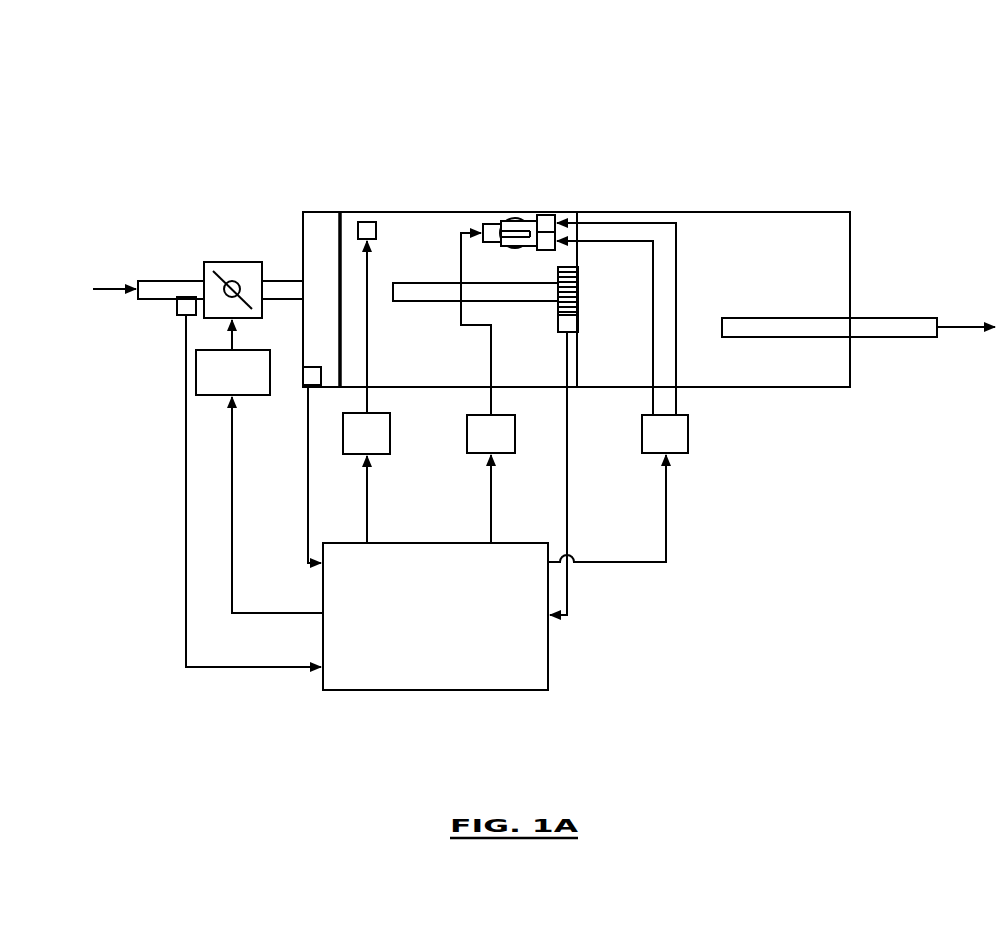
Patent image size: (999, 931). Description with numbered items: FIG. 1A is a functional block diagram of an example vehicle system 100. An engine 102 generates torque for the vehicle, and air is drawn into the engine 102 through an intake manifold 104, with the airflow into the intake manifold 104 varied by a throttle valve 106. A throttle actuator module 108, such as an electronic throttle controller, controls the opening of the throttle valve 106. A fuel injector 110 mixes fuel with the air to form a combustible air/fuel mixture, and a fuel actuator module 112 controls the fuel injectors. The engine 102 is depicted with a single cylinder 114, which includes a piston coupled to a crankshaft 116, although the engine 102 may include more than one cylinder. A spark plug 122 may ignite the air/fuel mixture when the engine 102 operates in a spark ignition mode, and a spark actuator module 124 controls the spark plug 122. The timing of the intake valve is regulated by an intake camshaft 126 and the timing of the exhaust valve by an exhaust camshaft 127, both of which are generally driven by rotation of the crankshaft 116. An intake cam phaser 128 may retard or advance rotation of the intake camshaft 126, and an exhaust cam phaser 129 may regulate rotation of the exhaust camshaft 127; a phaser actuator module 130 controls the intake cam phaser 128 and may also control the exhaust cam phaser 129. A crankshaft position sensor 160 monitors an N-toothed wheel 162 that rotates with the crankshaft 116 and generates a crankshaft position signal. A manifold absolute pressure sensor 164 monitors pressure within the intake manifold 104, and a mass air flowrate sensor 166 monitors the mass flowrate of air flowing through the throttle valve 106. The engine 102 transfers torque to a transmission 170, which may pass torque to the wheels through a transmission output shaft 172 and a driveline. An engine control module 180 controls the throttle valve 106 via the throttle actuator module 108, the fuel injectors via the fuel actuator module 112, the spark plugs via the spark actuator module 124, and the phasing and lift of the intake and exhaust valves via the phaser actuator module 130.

The vehicle system 100 is at (848, 60).
The engine 102 is at (447, 212).
The intake manifold 104 is at (326, 212).
The throttle valve 106 is at (237, 262).
The throttle actuator module 108 is at (238, 396).
The fuel injector 110 is at (368, 222).
The fuel actuator module 112 is at (370, 455).
The cylinder 114 is at (515, 218).
The crankshaft 116 is at (408, 283).
The spark plug 122 is at (487, 224).
The spark actuator module 124 is at (478, 455).
The intake camshaft 126 is at (532, 246).
The exhaust camshaft 127 is at (543, 215).
The intake cam phaser 128 is at (557, 250).
The exhaust cam phaser 129 is at (580, 213).
The phaser actuator module 130 is at (680, 455).
The crankshaft position sensor 160 is at (560, 333).
The N-toothed wheel 162 is at (557, 305).
The manifold absolute pressure sensor 164 is at (304, 374).
The mass air flowrate sensor 166 is at (177, 308).
The transmission 170 is at (706, 212).
The transmission output shaft 172 is at (790, 317).
The engine control module 180 is at (442, 690).